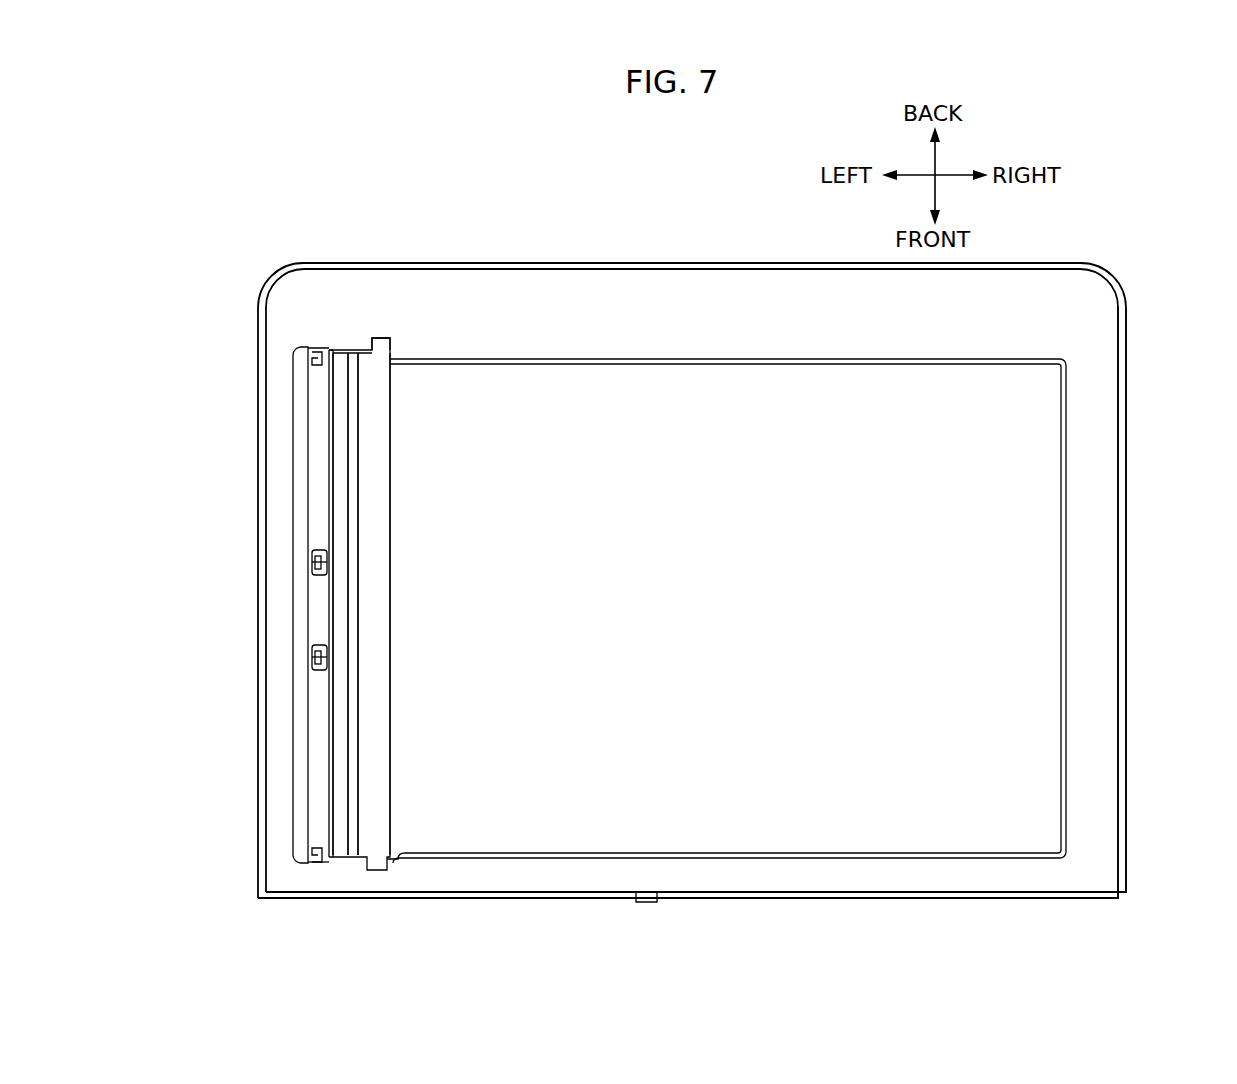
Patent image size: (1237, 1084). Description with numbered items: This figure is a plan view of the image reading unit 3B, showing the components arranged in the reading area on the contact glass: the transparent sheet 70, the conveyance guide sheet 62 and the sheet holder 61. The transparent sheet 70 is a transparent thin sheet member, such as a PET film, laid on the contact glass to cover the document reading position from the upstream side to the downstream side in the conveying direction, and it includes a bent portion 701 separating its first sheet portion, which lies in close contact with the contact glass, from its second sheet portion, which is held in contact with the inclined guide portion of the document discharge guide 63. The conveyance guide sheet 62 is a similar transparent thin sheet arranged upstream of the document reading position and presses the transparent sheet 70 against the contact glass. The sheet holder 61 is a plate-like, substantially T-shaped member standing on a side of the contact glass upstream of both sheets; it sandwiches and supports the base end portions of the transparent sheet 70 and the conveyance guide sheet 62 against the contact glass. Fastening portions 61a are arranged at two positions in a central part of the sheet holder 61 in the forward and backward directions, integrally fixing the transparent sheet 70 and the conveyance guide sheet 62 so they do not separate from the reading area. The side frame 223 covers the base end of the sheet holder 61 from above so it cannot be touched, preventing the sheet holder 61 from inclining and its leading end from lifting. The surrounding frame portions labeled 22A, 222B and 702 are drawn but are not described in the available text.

The image reading unit 3B is at (1130, 285).
The cover frame 22A is at (1097, 498).
The pressing plate 222B is at (1030, 728).
The side frame 223 is at (300, 383).
The sheet holder 61 is at (317, 750).
The fastening portions 61a is at (311, 658).
The conveyance guide sheet 62 is at (338, 514).
The document discharge guide 63 is at (377, 338).
The transparent sheet 70 is at (339, 531).
The bent portion 701 is at (360, 402).
The second portion of reading unit 702 is at (378, 452).